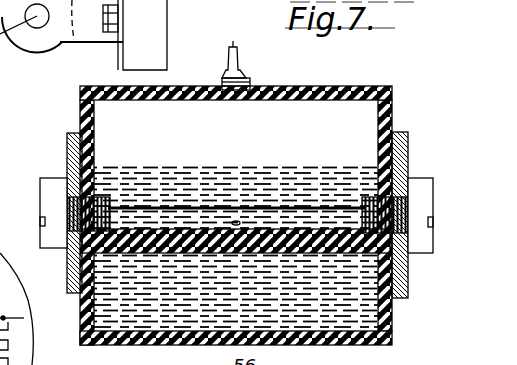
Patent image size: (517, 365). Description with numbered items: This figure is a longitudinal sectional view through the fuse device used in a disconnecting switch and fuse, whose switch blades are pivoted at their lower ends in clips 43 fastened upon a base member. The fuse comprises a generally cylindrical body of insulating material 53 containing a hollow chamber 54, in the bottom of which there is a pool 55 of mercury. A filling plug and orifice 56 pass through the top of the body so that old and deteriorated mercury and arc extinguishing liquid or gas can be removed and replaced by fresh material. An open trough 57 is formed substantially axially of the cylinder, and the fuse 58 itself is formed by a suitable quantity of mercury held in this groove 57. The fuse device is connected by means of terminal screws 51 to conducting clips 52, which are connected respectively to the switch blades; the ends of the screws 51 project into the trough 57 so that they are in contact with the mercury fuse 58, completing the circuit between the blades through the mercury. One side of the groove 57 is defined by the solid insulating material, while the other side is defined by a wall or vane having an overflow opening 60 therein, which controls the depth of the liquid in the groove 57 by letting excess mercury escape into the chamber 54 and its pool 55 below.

The clips 43 is at (80, 30).
The terminal screws 51 is at (48, 208).
The conducting clips 52 is at (394, 134).
The cylindrical body of insulating material 53 is at (355, 88).
The hollow chamber 54 is at (357, 116).
The pool of mercury 55 is at (392, 336).
The filling plug and orifice 56 is at (236, 57).
The open trough 57 is at (70, 167).
The fuse 58 is at (93, 253).
The overflow opening 60 is at (237, 221).